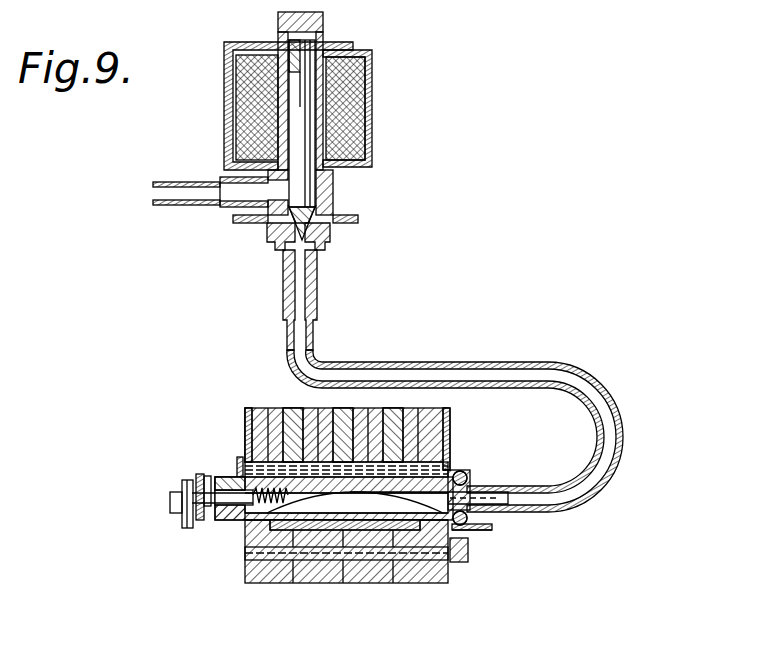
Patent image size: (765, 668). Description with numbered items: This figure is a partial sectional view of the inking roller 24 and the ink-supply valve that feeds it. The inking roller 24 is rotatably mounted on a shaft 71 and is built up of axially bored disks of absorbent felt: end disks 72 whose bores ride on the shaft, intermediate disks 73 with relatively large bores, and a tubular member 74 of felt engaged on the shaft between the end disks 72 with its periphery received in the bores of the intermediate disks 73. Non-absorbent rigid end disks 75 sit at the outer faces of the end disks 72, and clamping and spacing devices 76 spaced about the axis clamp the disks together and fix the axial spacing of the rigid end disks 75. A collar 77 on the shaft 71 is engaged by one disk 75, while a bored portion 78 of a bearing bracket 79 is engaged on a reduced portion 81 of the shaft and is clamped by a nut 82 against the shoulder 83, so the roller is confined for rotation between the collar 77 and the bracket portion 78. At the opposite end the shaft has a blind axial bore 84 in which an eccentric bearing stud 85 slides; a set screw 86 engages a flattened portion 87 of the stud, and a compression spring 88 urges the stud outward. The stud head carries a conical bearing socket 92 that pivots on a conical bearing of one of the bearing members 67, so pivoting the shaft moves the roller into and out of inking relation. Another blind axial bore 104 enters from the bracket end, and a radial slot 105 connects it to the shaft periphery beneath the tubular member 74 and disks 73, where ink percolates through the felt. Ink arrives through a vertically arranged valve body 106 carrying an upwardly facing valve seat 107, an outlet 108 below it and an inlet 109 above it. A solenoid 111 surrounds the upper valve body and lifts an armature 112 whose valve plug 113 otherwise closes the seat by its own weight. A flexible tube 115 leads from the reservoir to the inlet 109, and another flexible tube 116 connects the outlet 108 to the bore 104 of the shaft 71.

The solenoid 111 is at (372, 92).
The armature 112 is at (318, 133).
The valve body 106 is at (333, 195).
The valve plug 113 is at (303, 213).
The valve seat 107 is at (330, 243).
The outlet 108 is at (300, 285).
The flexible tube 115 is at (185, 197).
The inlet 109 is at (248, 207).
The flexible tube 116 is at (470, 370).
The blind axial bore 104 is at (513, 494).
The rigid end disks 75 is at (245, 420).
The intermediate disks 73 is at (293, 413).
The end disks 72 is at (265, 408).
The clamping and spacing devices 76 is at (240, 468).
The shaft 71 is at (240, 512).
The collar 77 is at (225, 512).
The set screw 86 is at (235, 480).
The compression spring 88 is at (298, 512).
The radial slot 105 is at (362, 514).
The inking roller 24 is at (255, 590).
The tubular member 74 is at (315, 532).
The conical bearing sockets 92 is at (195, 484).
The blind axial bore 84 is at (200, 505).
The flattened portion 87 is at (205, 478).
The eccentric bearing stud 85 is at (200, 477).
The bearing members 67 is at (170, 500).
The nut 82 is at (467, 477).
The bored portion 78 is at (466, 475).
The reduced portion 81 is at (470, 524).
The bearing bracket 79 is at (486, 535).
The shoulder 83 is at (460, 545).